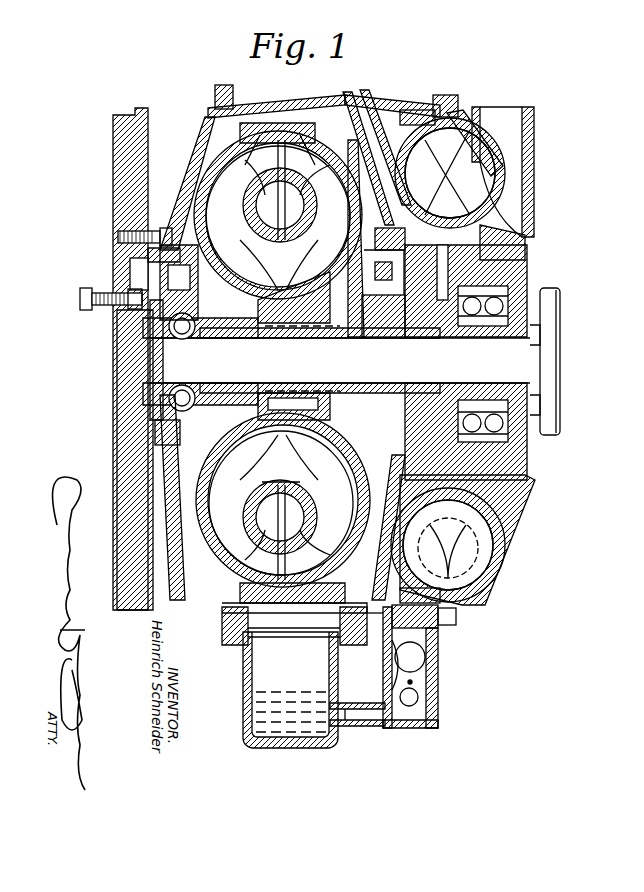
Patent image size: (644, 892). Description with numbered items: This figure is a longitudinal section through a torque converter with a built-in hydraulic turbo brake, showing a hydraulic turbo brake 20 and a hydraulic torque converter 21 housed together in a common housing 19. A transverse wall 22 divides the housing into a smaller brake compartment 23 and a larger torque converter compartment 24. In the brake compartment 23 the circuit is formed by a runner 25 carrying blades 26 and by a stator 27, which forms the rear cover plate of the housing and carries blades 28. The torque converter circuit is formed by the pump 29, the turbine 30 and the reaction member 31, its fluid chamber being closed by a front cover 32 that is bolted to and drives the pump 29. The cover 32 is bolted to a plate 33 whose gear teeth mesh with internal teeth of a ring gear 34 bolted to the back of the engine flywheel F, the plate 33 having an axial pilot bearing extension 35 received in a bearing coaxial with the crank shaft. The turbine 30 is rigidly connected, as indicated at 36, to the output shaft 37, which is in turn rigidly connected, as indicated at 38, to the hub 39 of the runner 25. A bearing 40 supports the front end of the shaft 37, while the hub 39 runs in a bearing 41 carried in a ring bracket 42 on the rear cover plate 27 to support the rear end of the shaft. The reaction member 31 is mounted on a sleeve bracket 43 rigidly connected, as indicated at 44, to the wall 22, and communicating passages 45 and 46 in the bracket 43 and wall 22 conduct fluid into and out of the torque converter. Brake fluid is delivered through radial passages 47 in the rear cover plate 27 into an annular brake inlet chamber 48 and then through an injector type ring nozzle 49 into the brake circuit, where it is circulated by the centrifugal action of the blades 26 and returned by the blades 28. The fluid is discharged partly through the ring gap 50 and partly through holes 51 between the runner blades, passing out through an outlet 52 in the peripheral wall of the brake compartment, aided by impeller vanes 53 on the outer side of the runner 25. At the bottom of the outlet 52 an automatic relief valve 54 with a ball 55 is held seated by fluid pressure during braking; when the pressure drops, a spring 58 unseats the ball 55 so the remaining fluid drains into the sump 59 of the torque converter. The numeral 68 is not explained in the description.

The flywheel F is at (113, 145).
The common housing 19 is at (255, 108).
The hydraulic turbo brake 20 is at (452, 165).
The hydraulic torque converter 21 is at (212, 160).
The transverse wall 22 is at (372, 570).
The brake compartment 23 is at (441, 112).
The torque converter compartment 24 is at (302, 100).
The runner 25 is at (408, 150).
The blades 26 is at (425, 150).
The stator 27 is at (535, 175).
The blades 28 is at (478, 150).
The pump 29 is at (307, 163).
The turbine 30 is at (215, 200).
The reaction member 31 is at (273, 267).
The front cover 32 is at (227, 128).
The plate 33 is at (158, 432).
The ring gear 34 is at (157, 497).
The axial pilot bearing extension 35 is at (112, 433).
The rigid connection 36 is at (247, 338).
The output shaft 37 is at (537, 330).
The rigid connection 38 is at (474, 327).
The hub 39 is at (440, 338).
The bearing 40 is at (182, 336).
The bearing 41 is at (490, 398).
The ring bracket 42 is at (518, 470).
The sleeve bracket 43 is at (355, 327).
The rigid connection 44 is at (382, 450).
The passages 45 is at (388, 268).
The passages 46 is at (362, 117).
The radial passages 47 is at (500, 125).
The annular brake inlet chamber 48 is at (485, 227).
The ring nozzle 49 is at (510, 500).
The ring gap 50 is at (458, 604).
The holes 51 is at (445, 587).
The outlet 52 is at (435, 635).
The impeller vanes 53 is at (438, 638).
The automatic relief valve 54 is at (432, 728).
The ball 55 is at (438, 700).
The spring 58 is at (415, 715).
The sump 59 is at (272, 690).
The valve chamber 68 is at (483, 563).